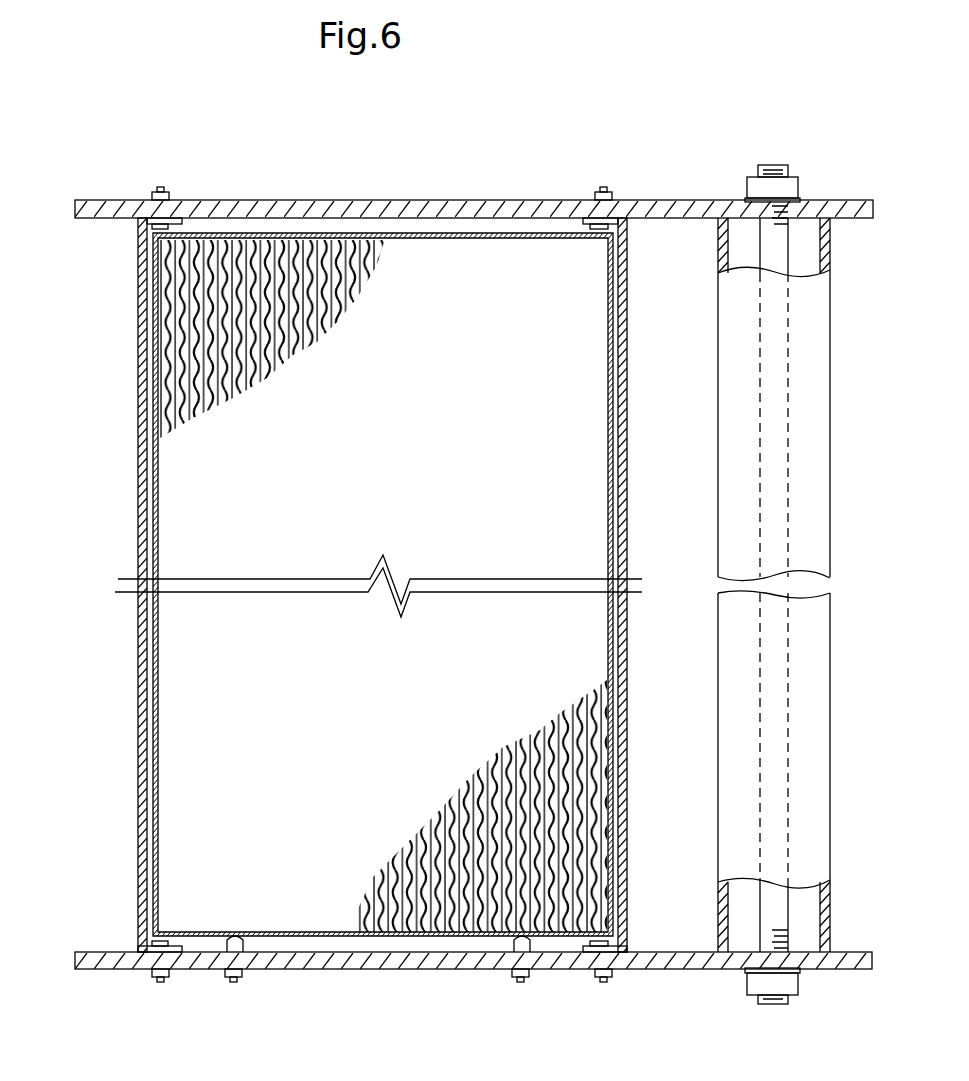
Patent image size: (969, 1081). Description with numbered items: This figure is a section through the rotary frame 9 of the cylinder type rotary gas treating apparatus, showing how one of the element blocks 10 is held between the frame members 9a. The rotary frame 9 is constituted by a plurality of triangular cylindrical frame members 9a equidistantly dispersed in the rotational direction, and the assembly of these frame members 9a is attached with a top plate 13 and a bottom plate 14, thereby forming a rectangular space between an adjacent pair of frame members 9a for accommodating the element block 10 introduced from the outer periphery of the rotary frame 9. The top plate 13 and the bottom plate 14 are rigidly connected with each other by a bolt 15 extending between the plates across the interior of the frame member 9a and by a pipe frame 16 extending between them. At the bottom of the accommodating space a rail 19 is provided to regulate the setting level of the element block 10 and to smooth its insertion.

The rotary frame 9 is at (535, 200).
The triangular cylindrical frame member 9a is at (628, 440).
The element block 10 is at (296, 235).
The top plate 13 is at (418, 200).
The bottom plate 14 is at (393, 970).
The bolt 15 is at (790, 445).
The pipe frame 16 is at (826, 520).
The rail 19 is at (232, 940).